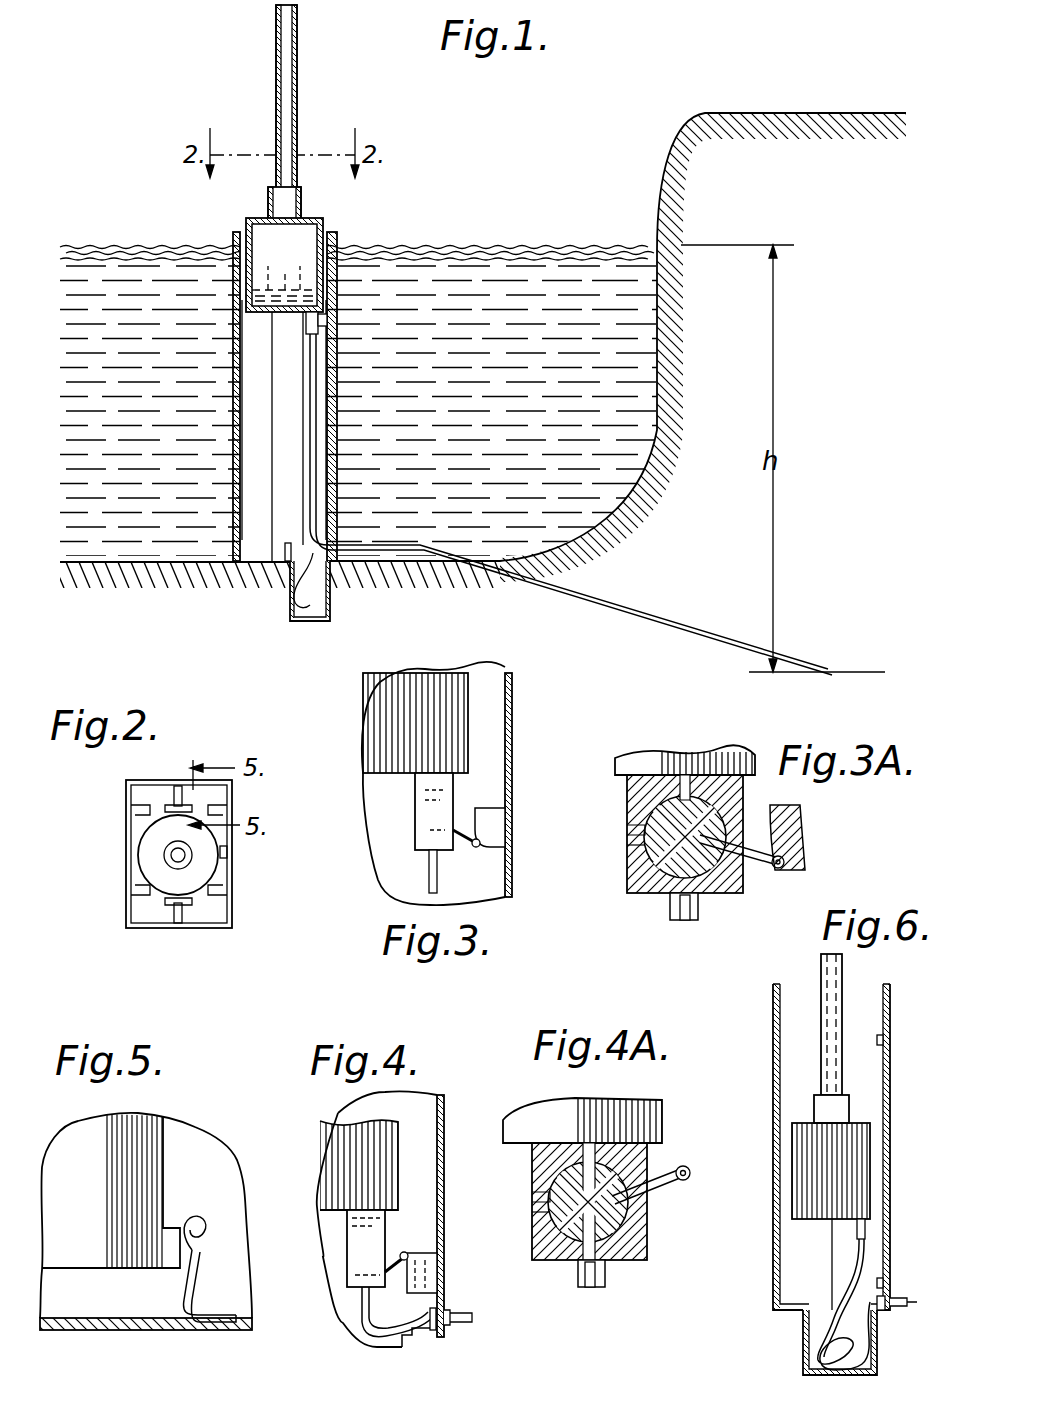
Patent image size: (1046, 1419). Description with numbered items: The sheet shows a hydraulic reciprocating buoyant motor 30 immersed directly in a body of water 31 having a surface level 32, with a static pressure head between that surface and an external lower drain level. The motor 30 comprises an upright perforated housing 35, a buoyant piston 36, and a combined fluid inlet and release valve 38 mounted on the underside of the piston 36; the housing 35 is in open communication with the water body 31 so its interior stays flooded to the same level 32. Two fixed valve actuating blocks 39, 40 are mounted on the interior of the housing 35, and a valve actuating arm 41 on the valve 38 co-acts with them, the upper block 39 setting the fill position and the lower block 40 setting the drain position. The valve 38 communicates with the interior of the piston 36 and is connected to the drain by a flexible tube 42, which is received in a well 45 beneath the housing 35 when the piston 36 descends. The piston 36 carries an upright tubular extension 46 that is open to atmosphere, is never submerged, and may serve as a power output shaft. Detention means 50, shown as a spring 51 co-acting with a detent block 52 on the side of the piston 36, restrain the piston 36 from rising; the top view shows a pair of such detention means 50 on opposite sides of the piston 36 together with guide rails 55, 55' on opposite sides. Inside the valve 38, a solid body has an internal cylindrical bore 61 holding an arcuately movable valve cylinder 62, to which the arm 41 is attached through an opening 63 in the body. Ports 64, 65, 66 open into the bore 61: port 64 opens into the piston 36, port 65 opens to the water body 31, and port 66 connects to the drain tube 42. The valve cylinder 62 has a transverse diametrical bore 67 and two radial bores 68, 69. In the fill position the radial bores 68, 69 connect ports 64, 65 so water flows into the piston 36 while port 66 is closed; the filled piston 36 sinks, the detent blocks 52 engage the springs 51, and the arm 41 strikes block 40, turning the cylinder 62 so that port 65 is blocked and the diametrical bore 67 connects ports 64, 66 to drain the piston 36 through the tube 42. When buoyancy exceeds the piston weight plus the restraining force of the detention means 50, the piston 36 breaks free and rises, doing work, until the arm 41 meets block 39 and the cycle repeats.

In FIG. 1, the reciprocating buoyant motor 30 is at (372, 204).
In FIG. 1, the body of water 31 is at (498, 398).
In FIG. 1, the surface level 32 is at (547, 245).
In FIG. 1, the perforated housing 35 is at (338, 278).
In FIG. 3, the perforated housing 35 is at (512, 733).
In FIG. 4, the perforated housing 35 is at (444, 1145).
In FIG. 6, the perforated housing 35 is at (890, 1010).
In FIG. 1, the buoyant piston 36 is at (248, 228).
In FIG. 2, the buoyant piston 36 is at (210, 858).
In FIG. 3, the buoyant piston 36 is at (450, 712).
In FIG. 3A, the buoyant piston 36 is at (735, 760).
In FIG. 5, the buoyant piston 36 is at (120, 1160).
In FIG. 4, the buoyant piston 36 is at (335, 1145).
In FIG. 4A, the buoyant piston 36 is at (660, 1112).
In FIG. 6, the buoyant piston 36 is at (860, 1138).
In FIG. 1, the combined fluid inlet and release valve 38 is at (306, 325).
In FIG. 3, the combined fluid inlet and release valve 38 is at (425, 815).
In FIG. 4, the combined fluid inlet and release valve 38 is at (366, 1248).
In FIG. 1, the valve actuating block 39 is at (326, 316).
In FIG. 2, the valve actuating block 39 is at (227, 852).
In FIG. 3, the valve actuating block 39 is at (490, 825).
In FIG. 3A, the valve actuating block 39 is at (800, 822).
In FIG. 6, the valve actuating block 39 is at (883, 1040).
In FIG. 1, the valve actuating block 40 is at (330, 575).
In FIG. 4, the valve actuating block 40 is at (425, 1275).
In FIG. 6, the valve actuating block 40 is at (884, 1290).
In FIG. 3A, the valve actuating arm 41 is at (768, 870).
In FIG. 4, the valve actuating arm 41 is at (404, 1252).
In FIG. 4A, the valve actuating arm 41 is at (670, 1183).
In FIG. 1, the flexible tube 42 is at (316, 452).
In FIG. 3, the flexible tube 42 is at (430, 872).
In FIG. 3A, the flexible tube 42 is at (692, 915).
In FIG. 4, the flexible tube 42 is at (365, 1308).
In FIG. 4A, the flexible tube 42 is at (590, 1285).
In FIG. 6, the flexible tube 42 is at (855, 1290).
In FIG. 1, the well 45 is at (298, 612).
In FIG. 6, the well 45 is at (808, 1338).
In FIG. 1, the upright tubular extension 46 is at (297, 32).
In FIG. 2, the upright tubular extension 46 is at (172, 858).
In FIG. 6, the upright tubular extension 46 is at (832, 1040).
In FIG. 5, the detention means 50 is at (212, 1283).
In FIG. 1, the spring 51 is at (287, 550).
In FIG. 2, the spring 51 is at (176, 790).
In FIG. 5, the spring 51 is at (204, 1236).
In FIG. 1, the detent block 52 is at (284, 269).
In FIG. 2, the detent block 52 is at (190, 806).
In FIG. 5, the detent block 52 is at (172, 1262).
In FIG. 1, the guide rail 55 is at (321, 420).
In FIG. 2, the guide rail 55 is at (212, 863).
In FIG. 1, the guide rail 55' is at (248, 420).
In FIG. 2, the guide rail 55' is at (142, 848).
In FIG. 3A, the internal cylindrical bore 61 is at (662, 872).
In FIG. 3A, the valve cylinder 62 is at (700, 860).
In FIG. 3A, the opening 63 is at (742, 812).
In FIG. 4A, the opening 63 is at (652, 1178).
In FIG. 3A, the port 64 is at (678, 795).
In FIG. 4A, the port 64 is at (590, 1148).
In FIG. 3A, the port 65 is at (630, 832).
In FIG. 4A, the port 65 is at (536, 1200).
In FIG. 3A, the port 66 is at (682, 896).
In FIG. 4A, the port 66 is at (580, 1268).
In FIG. 3A, the transverse diametrical bore 67 is at (652, 860).
In FIG. 4A, the transverse diametrical bore 67 is at (605, 1180).
In FIG. 3A, the radial bore 68 is at (688, 790).
In FIG. 4A, the radial bore 68 is at (580, 1180).
In FIG. 3A, the radial bore 69 is at (642, 847).
In FIG. 4A, the radial bore 69 is at (560, 1220).